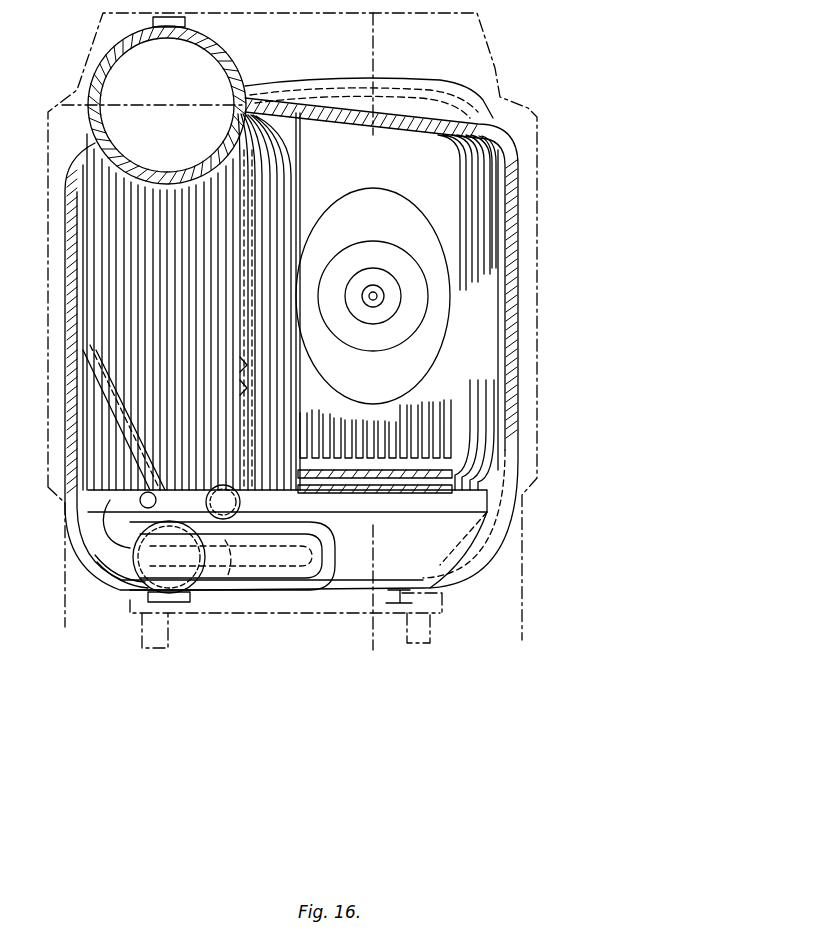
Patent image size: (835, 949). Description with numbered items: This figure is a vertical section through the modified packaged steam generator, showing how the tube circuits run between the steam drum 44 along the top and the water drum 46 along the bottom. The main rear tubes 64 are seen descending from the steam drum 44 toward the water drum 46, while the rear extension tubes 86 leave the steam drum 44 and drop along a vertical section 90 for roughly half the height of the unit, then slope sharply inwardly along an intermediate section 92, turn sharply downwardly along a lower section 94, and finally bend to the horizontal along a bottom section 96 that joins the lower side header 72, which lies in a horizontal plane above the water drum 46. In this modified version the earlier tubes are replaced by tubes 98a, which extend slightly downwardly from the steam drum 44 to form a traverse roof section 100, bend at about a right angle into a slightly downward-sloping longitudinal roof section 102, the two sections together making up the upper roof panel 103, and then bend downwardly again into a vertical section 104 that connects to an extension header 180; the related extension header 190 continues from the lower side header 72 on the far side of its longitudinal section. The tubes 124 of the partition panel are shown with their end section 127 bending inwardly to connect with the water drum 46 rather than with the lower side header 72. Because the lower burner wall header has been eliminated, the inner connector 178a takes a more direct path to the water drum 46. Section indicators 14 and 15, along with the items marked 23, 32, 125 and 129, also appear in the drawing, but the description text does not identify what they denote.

The section line 14- 14 is at (62, 290).
The section line 15- 15 is at (382, 664).
The housing dome 23 is at (493, 72).
The fan motor 32 is at (378, 268).
The steam drum 44 is at (155, 40).
The water drum 46 is at (143, 578).
The main rear tubes 64 is at (154, 301).
The lower side header 72 is at (287, 456).
The rear extension tubes 86 is at (93, 244).
The vertical section 90 is at (151, 302).
The intermediate section 92 is at (88, 417).
The lower section 94 is at (170, 502).
The bottom section 96 is at (134, 525).
The tubes 98a is at (497, 355).
The traverse roof section 100 is at (370, 127).
The longitudinal roof section 102 is at (322, 126).
The upper roof panel 103 is at (414, 138).
The vertical section 104 is at (497, 312).
The tubes 124 is at (262, 538).
The conduit 125 is at (248, 398).
The end section 127 is at (240, 570).
The conduit 129 is at (256, 183).
The inner connector 178a is at (474, 550).
The extension header 180 is at (432, 505).
The extension header 190 is at (169, 561).